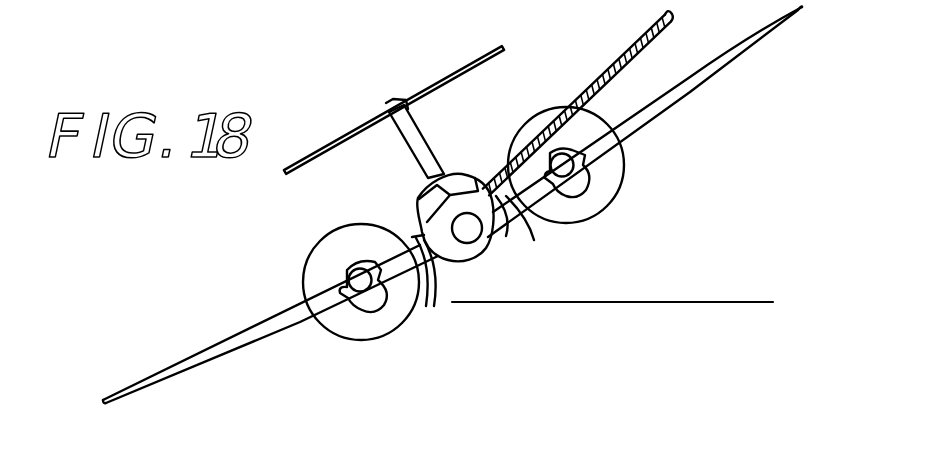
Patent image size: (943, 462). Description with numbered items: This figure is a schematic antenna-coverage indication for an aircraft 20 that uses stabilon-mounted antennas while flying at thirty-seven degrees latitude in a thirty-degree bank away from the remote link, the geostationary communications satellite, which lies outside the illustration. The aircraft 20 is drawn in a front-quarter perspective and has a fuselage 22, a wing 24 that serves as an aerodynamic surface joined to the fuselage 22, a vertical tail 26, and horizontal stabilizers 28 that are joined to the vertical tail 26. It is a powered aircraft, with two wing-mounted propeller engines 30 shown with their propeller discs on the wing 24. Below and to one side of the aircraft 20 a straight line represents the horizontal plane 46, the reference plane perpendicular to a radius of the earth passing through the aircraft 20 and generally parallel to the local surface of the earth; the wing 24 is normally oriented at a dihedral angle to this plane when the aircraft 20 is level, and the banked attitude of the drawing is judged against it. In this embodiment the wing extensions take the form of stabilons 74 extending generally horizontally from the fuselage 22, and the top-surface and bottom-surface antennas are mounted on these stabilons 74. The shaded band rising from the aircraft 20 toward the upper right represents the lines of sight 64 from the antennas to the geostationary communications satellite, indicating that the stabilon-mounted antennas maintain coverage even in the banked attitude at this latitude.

The aircraft 20 is at (206, 207).
The fuselage 22 is at (418, 197).
The wing 24 is at (188, 364).
The vertical tail 26 is at (412, 116).
The horizontal stabilizers 28 is at (434, 86).
The propeller engines 30 is at (340, 284).
The horizontal plane 46 is at (676, 301).
The lines of sight 64 is at (628, 56).
The stabilons 74 is at (496, 271).